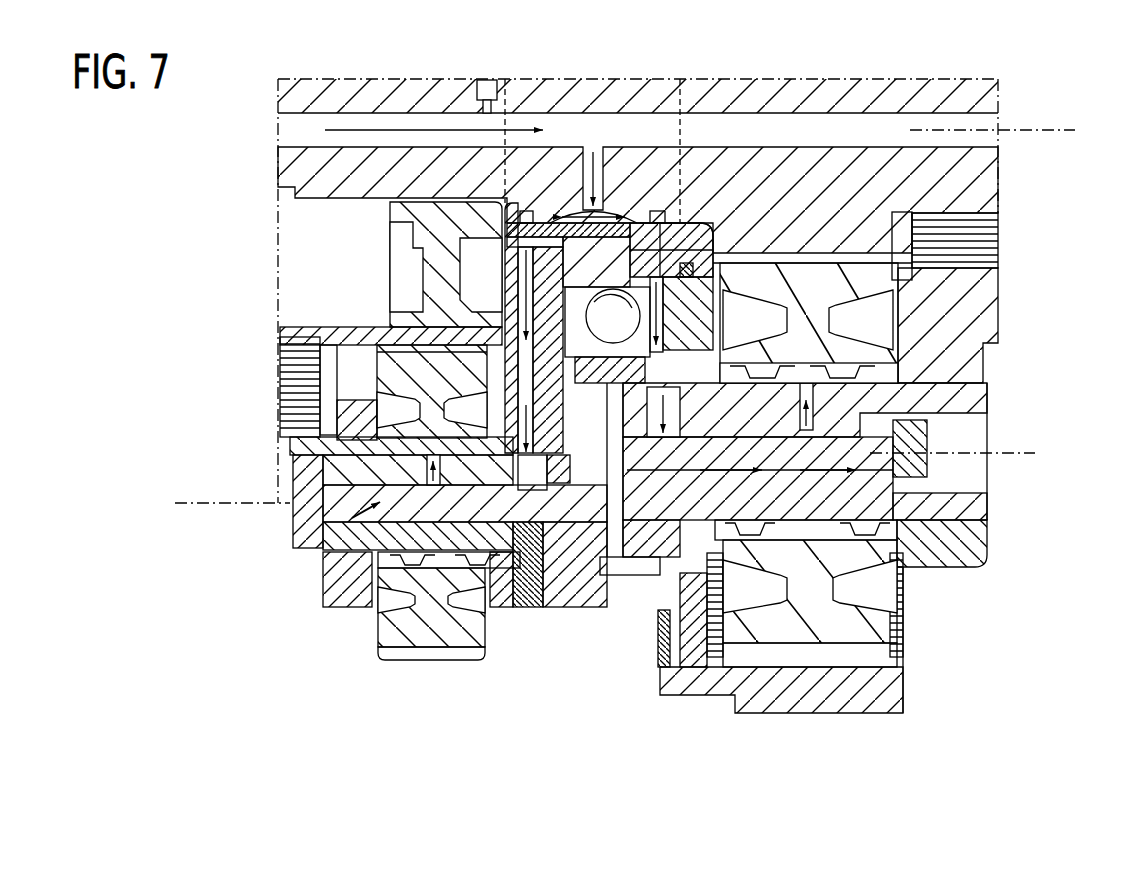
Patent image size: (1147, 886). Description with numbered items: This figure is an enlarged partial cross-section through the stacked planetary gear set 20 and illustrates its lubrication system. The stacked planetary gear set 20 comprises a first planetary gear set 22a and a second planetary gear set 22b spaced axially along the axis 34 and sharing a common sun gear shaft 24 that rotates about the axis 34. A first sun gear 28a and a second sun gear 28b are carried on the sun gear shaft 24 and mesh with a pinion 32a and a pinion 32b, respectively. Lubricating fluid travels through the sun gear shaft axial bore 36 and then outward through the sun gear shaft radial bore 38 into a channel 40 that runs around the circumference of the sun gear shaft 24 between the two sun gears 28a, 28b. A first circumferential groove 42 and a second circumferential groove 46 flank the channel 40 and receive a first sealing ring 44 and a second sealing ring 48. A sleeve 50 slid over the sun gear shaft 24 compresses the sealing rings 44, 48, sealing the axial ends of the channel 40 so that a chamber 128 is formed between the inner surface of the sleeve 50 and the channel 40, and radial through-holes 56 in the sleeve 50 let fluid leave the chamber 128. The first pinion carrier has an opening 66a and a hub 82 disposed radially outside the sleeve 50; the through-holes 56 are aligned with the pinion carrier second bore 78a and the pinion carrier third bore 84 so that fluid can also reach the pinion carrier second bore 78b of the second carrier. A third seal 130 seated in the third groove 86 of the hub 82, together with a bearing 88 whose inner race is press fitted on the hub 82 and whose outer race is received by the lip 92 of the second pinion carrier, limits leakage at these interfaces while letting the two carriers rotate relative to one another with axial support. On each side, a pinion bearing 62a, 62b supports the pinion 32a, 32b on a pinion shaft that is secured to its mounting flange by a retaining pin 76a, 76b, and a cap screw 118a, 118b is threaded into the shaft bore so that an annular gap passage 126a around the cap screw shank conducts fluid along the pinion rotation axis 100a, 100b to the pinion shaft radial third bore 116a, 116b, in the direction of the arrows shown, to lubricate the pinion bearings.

The stacked planetary gear set 20 is at (601, 359).
The first planetary gear set 22a is at (196, 257).
The second planetary gear set 22b is at (1022, 605).
The sun gear shaft 24 is at (953, 175).
The sun gear 28a is at (445, 278).
The sun gear 28b is at (847, 243).
The pinion 32a is at (413, 377).
The pinion 32b is at (870, 320).
The axis 34 is at (1060, 130).
The sun gear shaft axial bore 36 is at (973, 120).
The sun gear shaft radial bore 38 is at (588, 147).
The channel 40 is at (660, 215).
The first circumferential groove 42 is at (683, 220).
The first sealing ring 44 is at (697, 220).
The second circumferential groove 46 is at (527, 211).
The second sealing ring 48 is at (511, 257).
The sleeve 50 is at (700, 223).
The radial through-holes 56 is at (680, 218).
The pinion bearing 62a is at (395, 590).
The pinion bearing 62b is at (865, 372).
The opening 66a is at (705, 215).
The retaining pin 76a is at (530, 597).
The retaining pin 76b is at (650, 540).
The pinion carrier second bore 78a is at (505, 235).
The pinion carrier second bore 78b is at (668, 347).
The hub 82 is at (563, 240).
The pinion carrier third bore 84 is at (693, 215).
The third groove 86 is at (710, 222).
The bearing 88 is at (611, 322).
The lip 92 is at (632, 380).
The pinion rotation axis 100a is at (212, 503).
The pinion rotation axis 100b is at (1012, 453).
The pinion shaft radial third bore 116a is at (427, 463).
The pinion shaft radial third bore 116b is at (850, 405).
The cap screw 118a is at (372, 525).
The cap screw 118b is at (873, 482).
The annular gap passage 126a is at (345, 512).
The chamber 128 is at (687, 220).
The third seal 130 is at (735, 255).